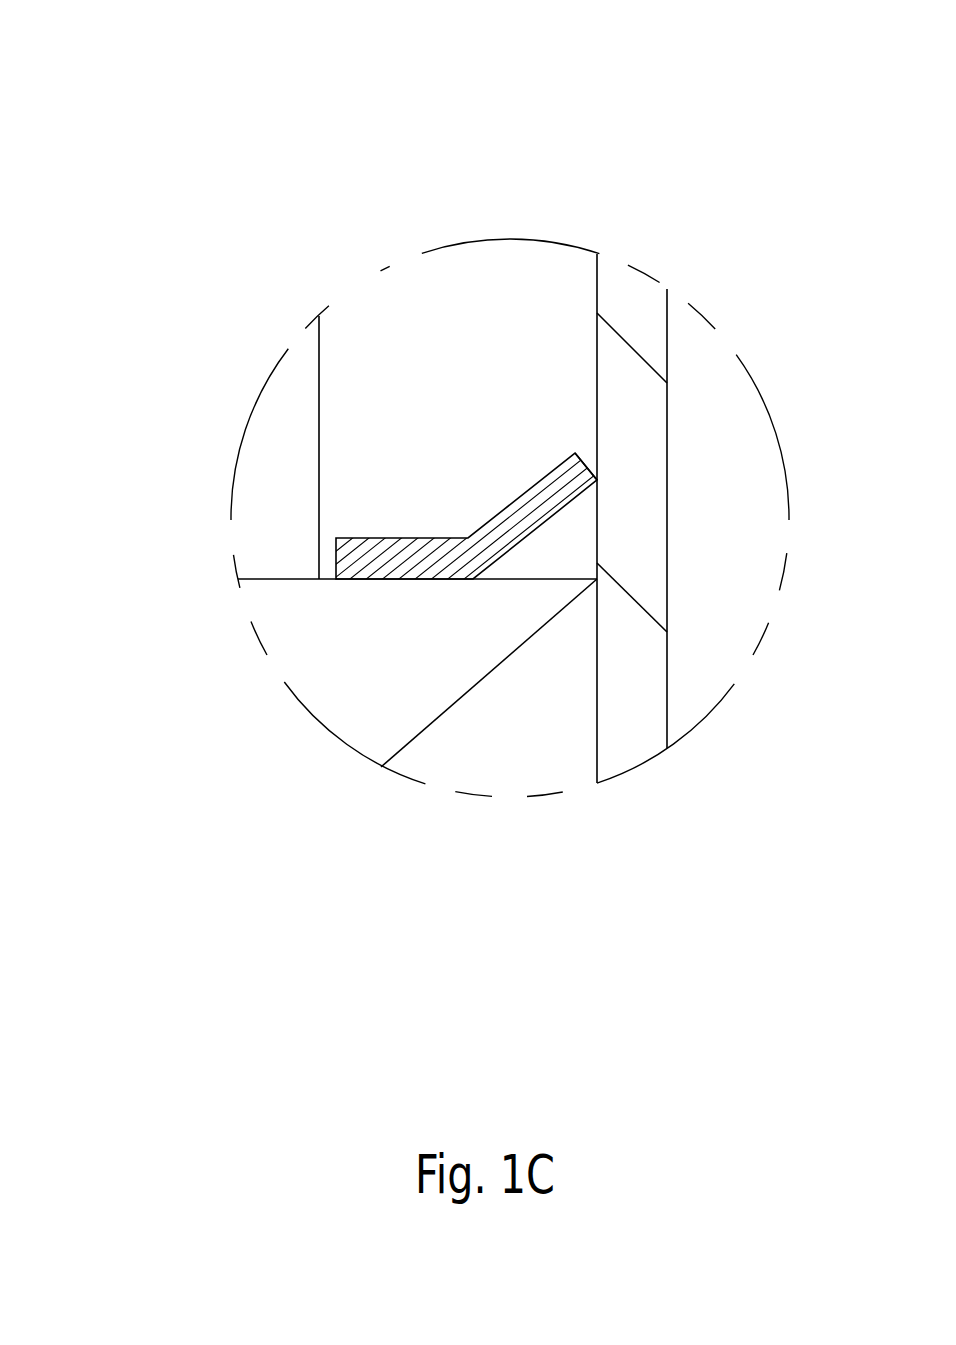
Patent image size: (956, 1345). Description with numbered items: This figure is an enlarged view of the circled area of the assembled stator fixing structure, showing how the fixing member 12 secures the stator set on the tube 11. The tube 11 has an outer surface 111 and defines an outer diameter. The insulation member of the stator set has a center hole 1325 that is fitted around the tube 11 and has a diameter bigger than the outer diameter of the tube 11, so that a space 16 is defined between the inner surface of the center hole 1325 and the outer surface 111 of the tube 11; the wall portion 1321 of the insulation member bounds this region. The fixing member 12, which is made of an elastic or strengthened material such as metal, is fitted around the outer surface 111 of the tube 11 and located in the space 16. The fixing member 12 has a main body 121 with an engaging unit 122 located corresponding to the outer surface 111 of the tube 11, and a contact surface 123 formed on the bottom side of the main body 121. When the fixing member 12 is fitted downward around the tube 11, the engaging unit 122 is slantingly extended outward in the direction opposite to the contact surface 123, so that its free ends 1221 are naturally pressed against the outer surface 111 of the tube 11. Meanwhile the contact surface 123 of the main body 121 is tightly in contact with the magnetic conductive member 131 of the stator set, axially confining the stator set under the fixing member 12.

The tube 11 is at (693, 425).
The outer surface 111 is at (595, 413).
The fixing member 12 is at (393, 473).
The main body 121 is at (387, 371).
The engaging unit 122 is at (476, 354).
The free ends 1221 is at (557, 245).
The contact surface 123 is at (355, 757).
The magnetic conductive member 131 is at (365, 673).
The side wall portion 1321 is at (182, 376).
The center hole 1325 is at (217, 366).
The space 16 is at (266, 242).